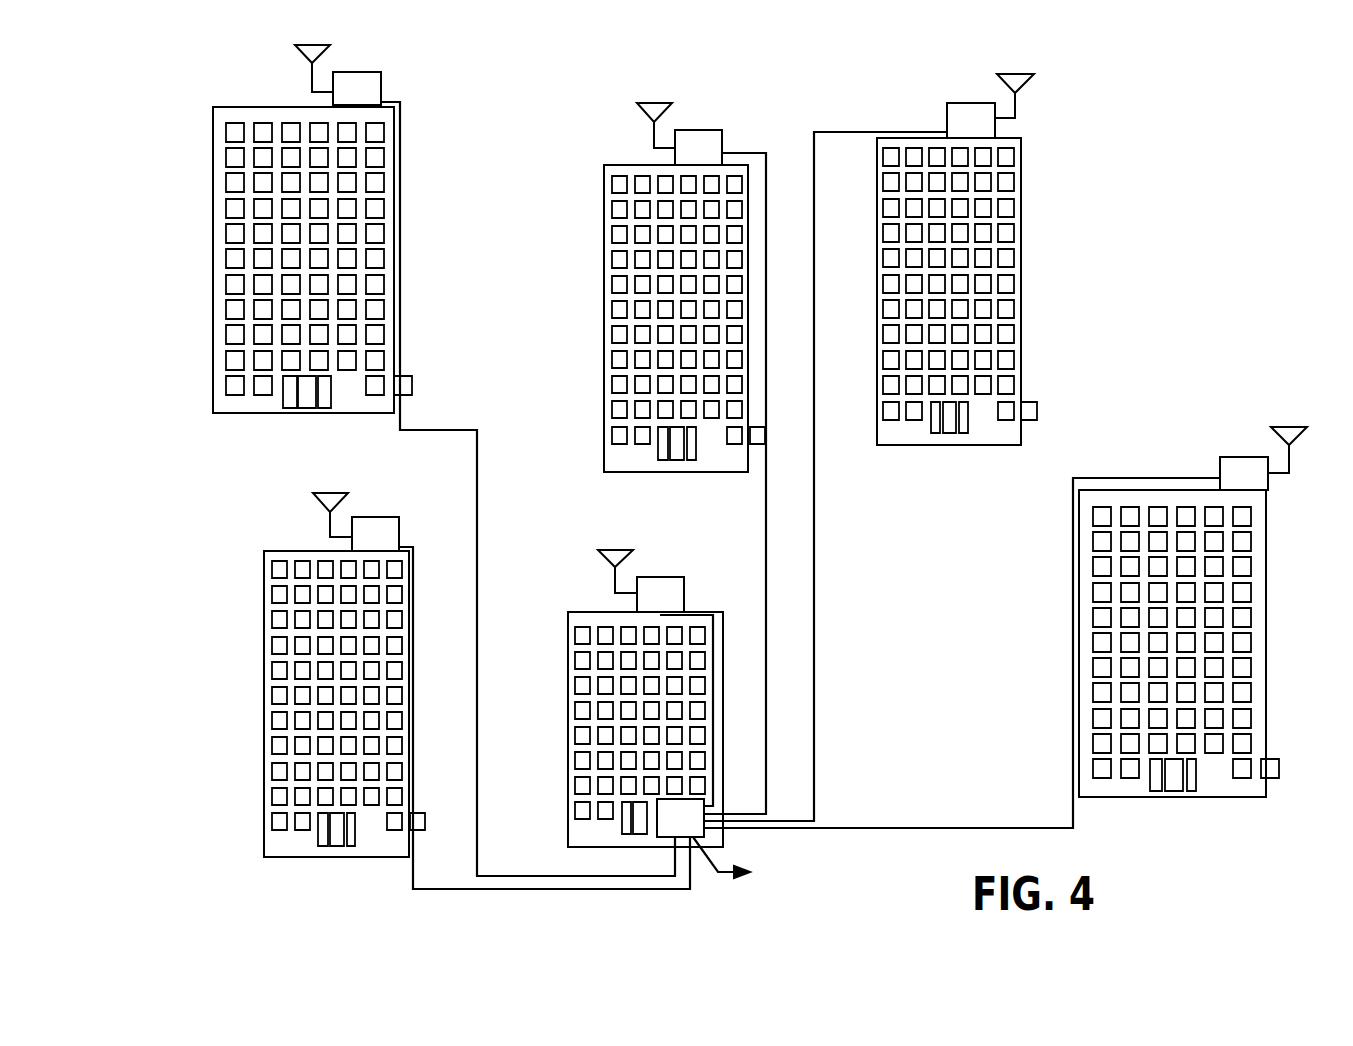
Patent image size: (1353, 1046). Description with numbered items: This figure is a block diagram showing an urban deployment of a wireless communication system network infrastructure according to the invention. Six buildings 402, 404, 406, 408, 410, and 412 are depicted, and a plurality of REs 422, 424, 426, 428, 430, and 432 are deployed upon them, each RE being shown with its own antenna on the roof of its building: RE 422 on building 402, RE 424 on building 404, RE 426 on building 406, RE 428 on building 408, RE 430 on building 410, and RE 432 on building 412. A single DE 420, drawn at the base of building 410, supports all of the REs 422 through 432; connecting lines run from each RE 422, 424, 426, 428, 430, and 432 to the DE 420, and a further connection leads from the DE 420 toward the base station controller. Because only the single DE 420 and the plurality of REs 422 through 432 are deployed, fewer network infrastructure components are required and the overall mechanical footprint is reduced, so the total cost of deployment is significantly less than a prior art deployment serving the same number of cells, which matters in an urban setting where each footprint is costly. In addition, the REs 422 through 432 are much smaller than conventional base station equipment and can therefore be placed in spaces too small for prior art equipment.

The building 402 is at (280, 105).
The building 404 is at (642, 163).
The building 406 is at (1022, 175).
The building 408 is at (310, 551).
The building 410 is at (607, 612).
The building 412 is at (1267, 559).
The DE 420 is at (662, 840).
The RE 422 is at (362, 72).
The RE 424 is at (697, 130).
The RE 426 is at (970, 103).
The RE 428 is at (375, 517).
The RE 430 is at (660, 577).
The RE 432 is at (1252, 457).